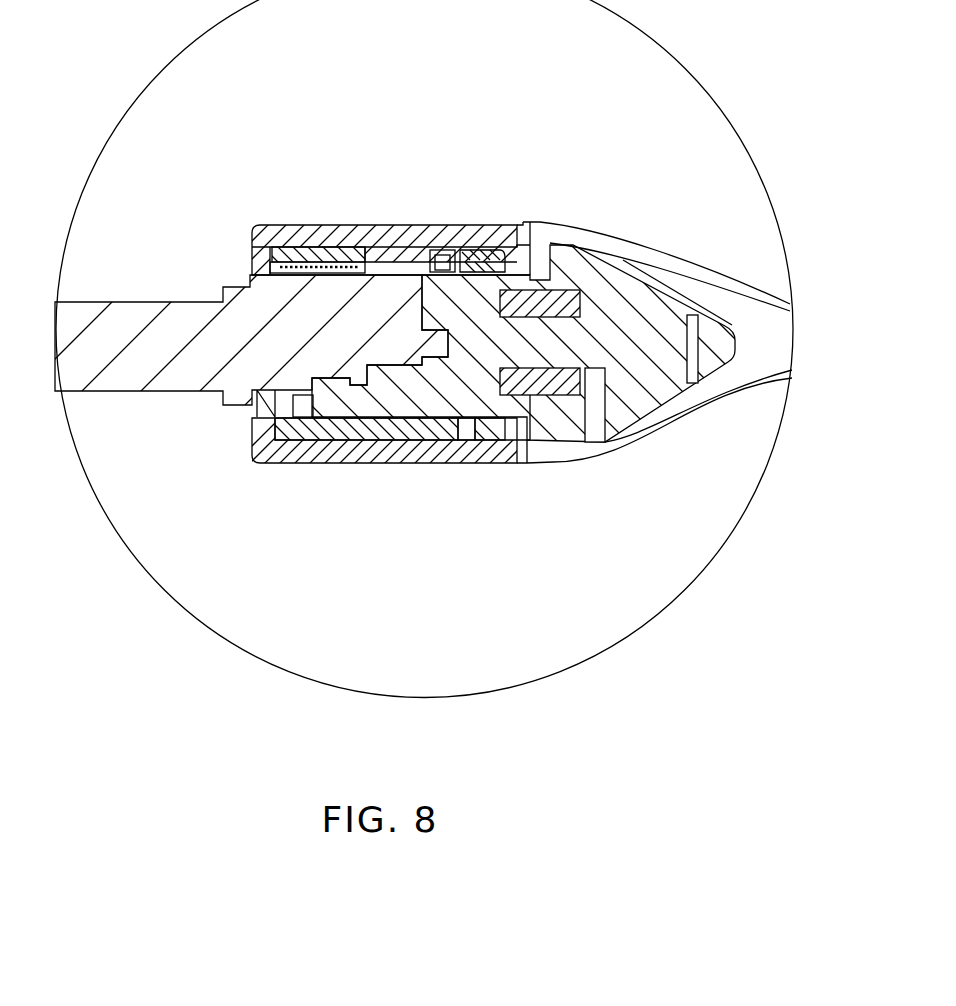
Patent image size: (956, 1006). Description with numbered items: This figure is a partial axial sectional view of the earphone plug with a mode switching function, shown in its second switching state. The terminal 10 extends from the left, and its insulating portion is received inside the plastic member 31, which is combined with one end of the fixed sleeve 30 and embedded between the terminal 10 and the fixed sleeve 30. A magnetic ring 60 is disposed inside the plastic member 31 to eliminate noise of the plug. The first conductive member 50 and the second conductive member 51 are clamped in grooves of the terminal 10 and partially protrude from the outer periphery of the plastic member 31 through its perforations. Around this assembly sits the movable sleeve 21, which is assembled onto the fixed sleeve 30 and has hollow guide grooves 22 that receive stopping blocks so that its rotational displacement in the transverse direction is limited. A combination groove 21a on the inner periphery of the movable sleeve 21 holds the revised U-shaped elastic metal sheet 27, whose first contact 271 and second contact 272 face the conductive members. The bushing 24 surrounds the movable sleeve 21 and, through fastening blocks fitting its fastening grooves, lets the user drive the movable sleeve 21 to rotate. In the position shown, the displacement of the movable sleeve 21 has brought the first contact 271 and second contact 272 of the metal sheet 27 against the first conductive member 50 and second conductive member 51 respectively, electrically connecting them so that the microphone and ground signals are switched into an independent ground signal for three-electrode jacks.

The terminal 10 is at (158, 310).
The movable sleeve 21 is at (387, 198).
The combination groove 21a is at (338, 255).
The guide grooves 22 is at (375, 420).
The bushing 24 is at (480, 224).
The elastic metal sheet 27 is at (349, 420).
The first contact 271 is at (288, 273).
The second contact 272 is at (317, 273).
The fixed sleeve 30 is at (694, 240).
The plastic member 31 is at (595, 285).
The first conductive member 50 is at (341, 214).
The second conductive member 51 is at (316, 265).
The magnetic ring 60 is at (527, 290).